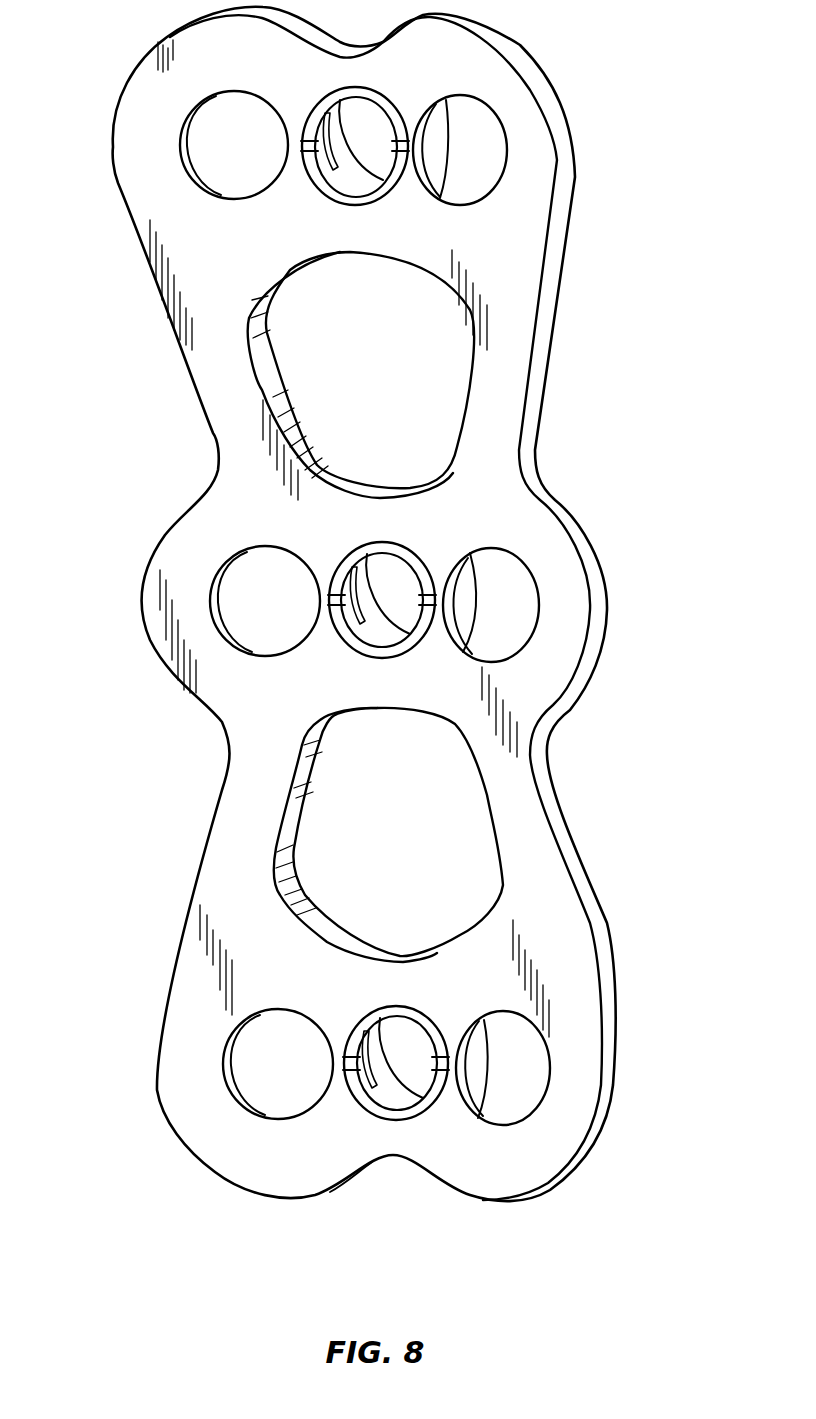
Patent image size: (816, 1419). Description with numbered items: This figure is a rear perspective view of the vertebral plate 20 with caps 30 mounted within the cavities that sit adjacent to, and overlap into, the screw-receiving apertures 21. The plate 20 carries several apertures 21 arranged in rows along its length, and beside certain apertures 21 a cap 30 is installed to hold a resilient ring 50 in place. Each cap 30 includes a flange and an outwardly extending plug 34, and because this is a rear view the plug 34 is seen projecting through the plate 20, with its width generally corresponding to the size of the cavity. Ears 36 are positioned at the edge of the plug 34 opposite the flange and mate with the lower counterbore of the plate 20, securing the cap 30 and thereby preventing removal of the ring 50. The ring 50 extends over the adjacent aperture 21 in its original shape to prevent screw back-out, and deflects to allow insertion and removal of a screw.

The vertebral plate 20 is at (510, 252).
The aperture 21 is at (263, 580).
The cap 30 is at (348, 180).
The plug 34 is at (385, 632).
The ears 36 is at (430, 588).
The ring 50 is at (476, 1063).